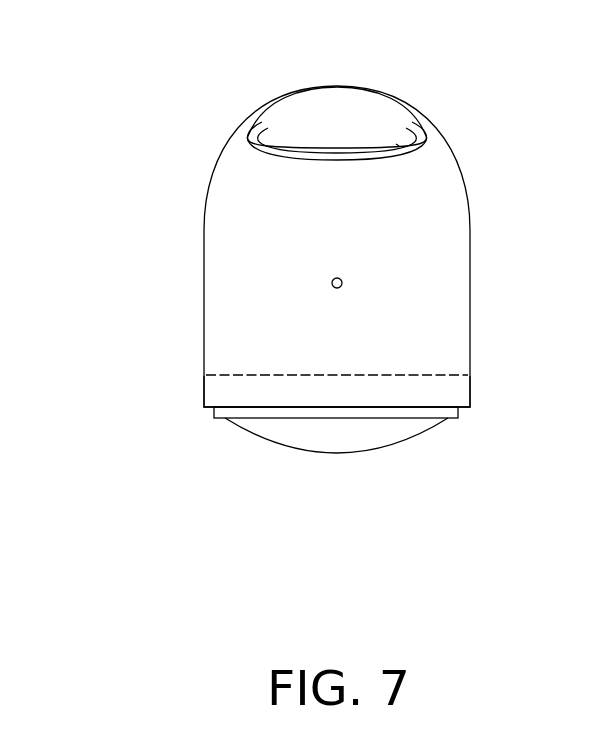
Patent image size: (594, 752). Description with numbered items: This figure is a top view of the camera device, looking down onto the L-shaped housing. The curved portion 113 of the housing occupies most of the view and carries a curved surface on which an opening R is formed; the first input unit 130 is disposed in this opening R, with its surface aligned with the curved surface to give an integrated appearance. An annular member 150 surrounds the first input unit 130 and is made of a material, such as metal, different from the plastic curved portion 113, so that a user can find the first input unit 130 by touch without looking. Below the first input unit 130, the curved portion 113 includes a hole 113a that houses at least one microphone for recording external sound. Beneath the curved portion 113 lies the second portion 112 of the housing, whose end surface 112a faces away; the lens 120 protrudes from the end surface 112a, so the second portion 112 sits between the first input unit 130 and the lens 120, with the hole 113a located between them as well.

The curved portion 113 is at (447, 283).
The hole 113a is at (332, 283).
The first input unit 130 is at (337, 110).
The annular member 150 is at (423, 145).
The opening R is at (397, 145).
The second portion 112 is at (447, 392).
The end surface 112a is at (460, 408).
The lens 120 is at (337, 431).